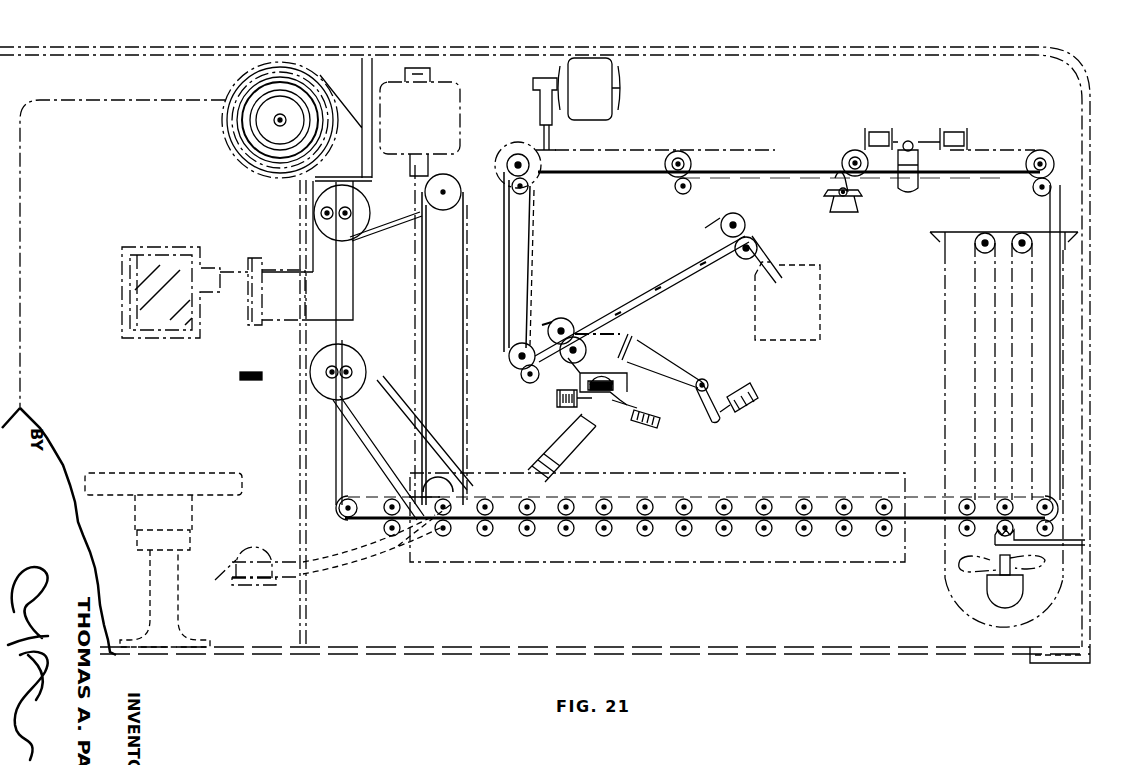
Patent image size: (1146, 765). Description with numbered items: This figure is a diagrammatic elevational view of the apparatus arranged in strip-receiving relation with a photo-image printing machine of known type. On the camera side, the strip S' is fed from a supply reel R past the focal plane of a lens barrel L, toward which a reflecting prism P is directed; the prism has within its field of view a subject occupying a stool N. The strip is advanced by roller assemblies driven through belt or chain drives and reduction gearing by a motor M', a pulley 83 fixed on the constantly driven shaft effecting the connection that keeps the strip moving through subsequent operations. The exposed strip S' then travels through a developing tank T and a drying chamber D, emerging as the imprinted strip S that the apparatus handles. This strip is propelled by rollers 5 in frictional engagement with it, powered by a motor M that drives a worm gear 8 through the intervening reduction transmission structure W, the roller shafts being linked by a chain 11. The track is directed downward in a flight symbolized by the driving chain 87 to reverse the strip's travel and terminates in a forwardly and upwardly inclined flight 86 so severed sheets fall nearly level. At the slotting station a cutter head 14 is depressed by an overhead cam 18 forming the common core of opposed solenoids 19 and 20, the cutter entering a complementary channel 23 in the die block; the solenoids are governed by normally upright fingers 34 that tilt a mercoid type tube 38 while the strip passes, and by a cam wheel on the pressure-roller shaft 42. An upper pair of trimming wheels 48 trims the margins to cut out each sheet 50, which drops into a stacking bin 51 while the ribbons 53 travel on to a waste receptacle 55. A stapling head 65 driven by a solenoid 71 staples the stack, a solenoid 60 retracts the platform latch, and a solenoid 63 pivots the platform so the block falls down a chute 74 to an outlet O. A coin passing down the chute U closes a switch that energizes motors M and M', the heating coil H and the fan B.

The supply reel R is at (240, 120).
The reflecting prism P is at (168, 268).
The channel 23 is at (101, 282).
The lens barrel L is at (325, 297).
The chute U is at (238, 378).
The stool N is at (172, 626).
The outlet O is at (258, 555).
The motor M' is at (420, 122).
The pulley 83 is at (443, 203).
The cam 18 is at (482, 58).
The reduction transmission structure W is at (540, 102).
The motor M is at (589, 89).
The worm gear 8 is at (510, 180).
The driving chain 87 is at (528, 292).
The imprinted strip S is at (789, 173).
The rollers 5 is at (686, 156).
The chain 11 is at (733, 150).
The shaft 42 is at (848, 152).
The fingers 34 is at (834, 176).
The mercoid type tube 38 is at (856, 198).
The cutter head 14 is at (913, 165).
The solenoid 19 is at (870, 130).
The solenoid 20 is at (966, 130).
The strip S' is at (714, 350).
The inclined flight 86 is at (702, 264).
The ribbons 53 is at (760, 252).
The waste receptacle 55 is at (822, 330).
The upper pair of trimming wheels 48 is at (566, 320).
The sheet 50 is at (606, 328).
The stacking bin 51 is at (576, 378).
The solenoid 60 is at (580, 407).
The solenoid 63 is at (660, 420).
The stapling head 65 is at (636, 344).
The solenoid 71 is at (760, 398).
The chute 74 is at (570, 445).
The developing tank T is at (640, 552).
The drying chamber D is at (1066, 358).
The heating coil H is at (1085, 520).
The fan B is at (990, 585).